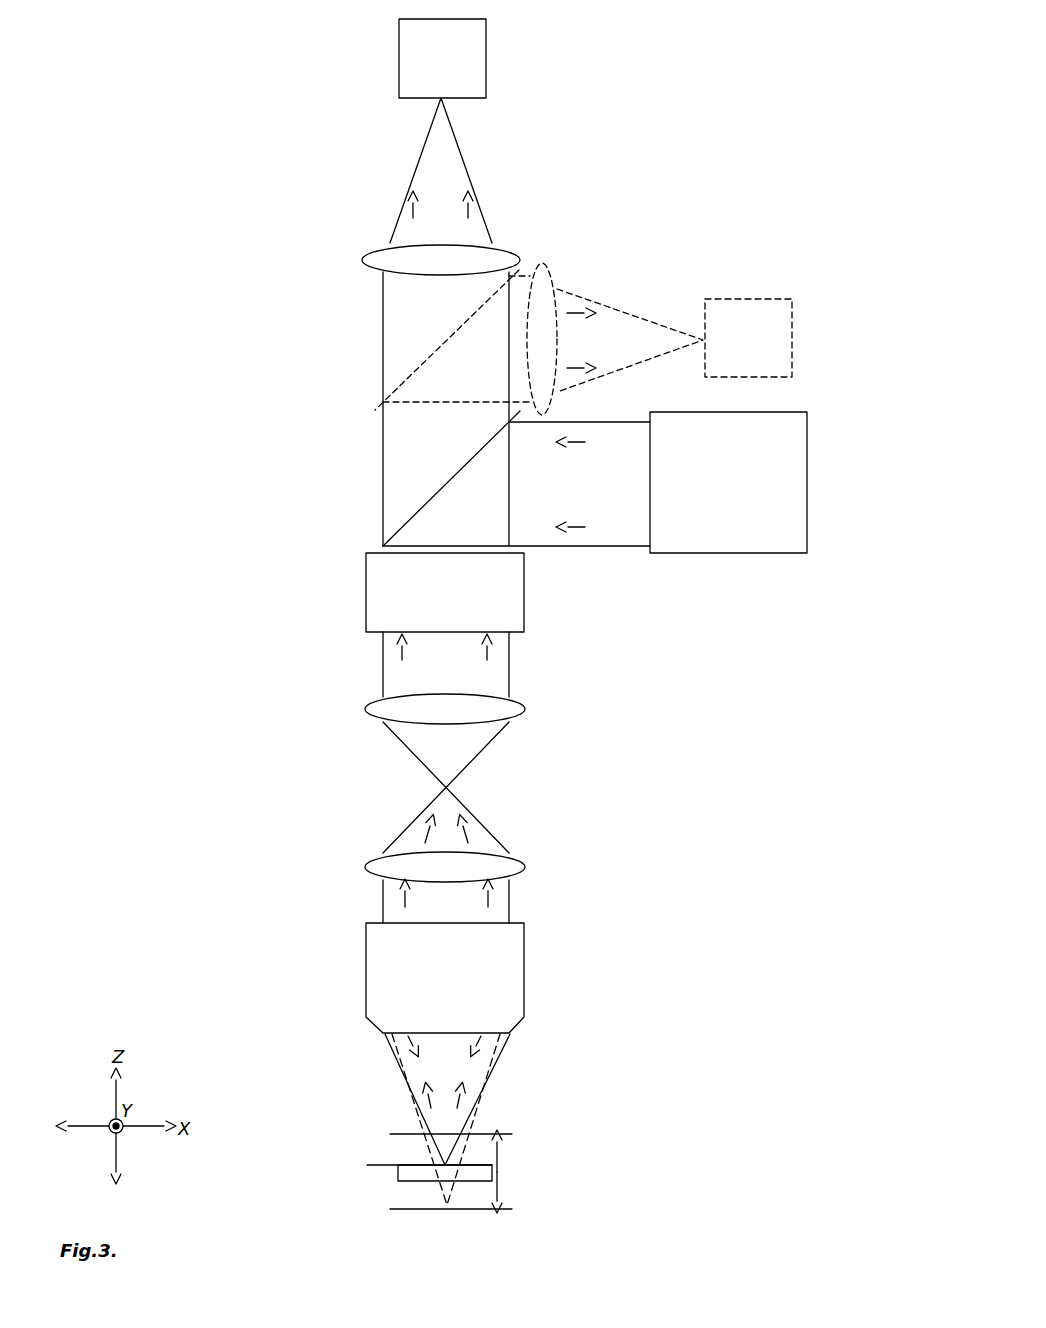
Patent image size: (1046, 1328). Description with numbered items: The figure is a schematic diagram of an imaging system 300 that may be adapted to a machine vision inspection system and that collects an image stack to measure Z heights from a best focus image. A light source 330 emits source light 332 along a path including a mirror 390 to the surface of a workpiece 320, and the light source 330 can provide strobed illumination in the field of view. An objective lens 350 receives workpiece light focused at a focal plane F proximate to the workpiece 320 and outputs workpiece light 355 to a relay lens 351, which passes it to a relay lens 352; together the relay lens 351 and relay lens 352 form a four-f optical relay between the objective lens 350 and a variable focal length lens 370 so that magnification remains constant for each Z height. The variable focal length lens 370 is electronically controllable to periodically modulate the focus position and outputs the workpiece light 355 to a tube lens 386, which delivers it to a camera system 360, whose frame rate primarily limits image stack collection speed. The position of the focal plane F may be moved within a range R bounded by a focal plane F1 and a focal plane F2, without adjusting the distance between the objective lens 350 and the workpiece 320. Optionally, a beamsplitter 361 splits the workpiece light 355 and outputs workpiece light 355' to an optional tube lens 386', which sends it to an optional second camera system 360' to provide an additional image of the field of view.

The imaging system 300 is at (742, 50).
The camera system 360 is at (482, 58).
The workpiece light 355 is at (487, 657).
The tube lens 386 is at (401, 260).
The optional tube lens 386' is at (610, 320).
The optional beamsplitter 361 is at (418, 360).
The optional second camera system 360' is at (779, 315).
The workpiece light 355' is at (593, 315).
The mirror 390 is at (395, 535).
The light source 330 is at (742, 553).
The source light 332 is at (582, 527).
The variable focal length lens 370 is at (524, 578).
The relay lens 352 is at (525, 710).
The relay lens 351 is at (525, 866).
The objective lens 350 is at (524, 963).
The workpiece 320 is at (398, 1172).
The focal plane F is at (375, 1163).
The focal plane F1 is at (498, 1136).
The focal plane F2 is at (497, 1210).
The range R is at (497, 1155).